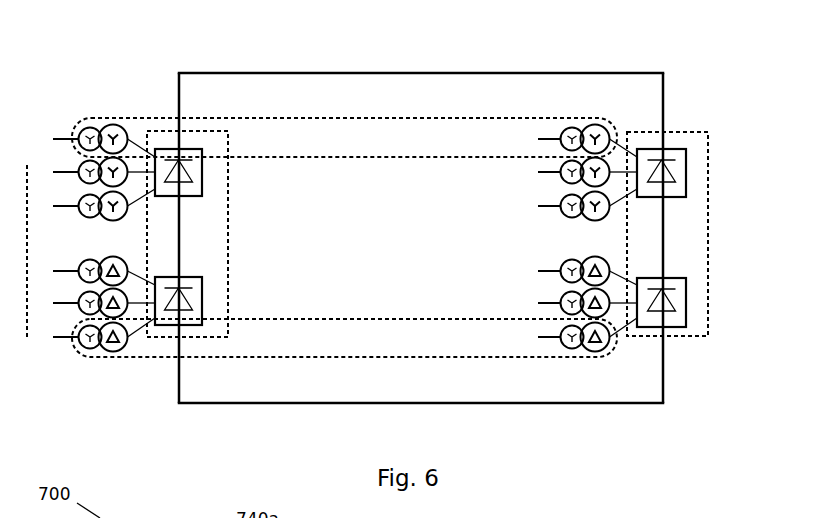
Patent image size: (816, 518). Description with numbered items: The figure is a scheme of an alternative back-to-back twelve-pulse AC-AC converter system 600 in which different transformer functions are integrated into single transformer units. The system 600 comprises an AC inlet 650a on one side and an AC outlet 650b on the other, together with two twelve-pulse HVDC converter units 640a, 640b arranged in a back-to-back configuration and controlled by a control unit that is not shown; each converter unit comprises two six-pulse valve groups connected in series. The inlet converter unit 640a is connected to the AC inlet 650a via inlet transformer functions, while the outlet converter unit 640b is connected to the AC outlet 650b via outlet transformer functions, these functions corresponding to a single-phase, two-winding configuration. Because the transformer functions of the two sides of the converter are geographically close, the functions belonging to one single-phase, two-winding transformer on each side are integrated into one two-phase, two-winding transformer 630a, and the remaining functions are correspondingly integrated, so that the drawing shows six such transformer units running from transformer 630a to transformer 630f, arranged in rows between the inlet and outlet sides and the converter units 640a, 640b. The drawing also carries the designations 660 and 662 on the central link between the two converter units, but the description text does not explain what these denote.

The back-to-back 12 pulse AC-AC converter system 600 is at (140, 84).
The two-phase, two-winding transformer 630a is at (72, 347).
The two-phase, two-winding transformer unit 630f is at (73, 145).
The inlet converter unit 640a is at (230, 129).
The outlet converter unit 640b is at (707, 131).
The AC inlet 650a is at (152, 261).
The AC outlet 650b is at (579, 261).
The DC link 660 is at (328, 407).
The DC link conductor 662 is at (433, 75).